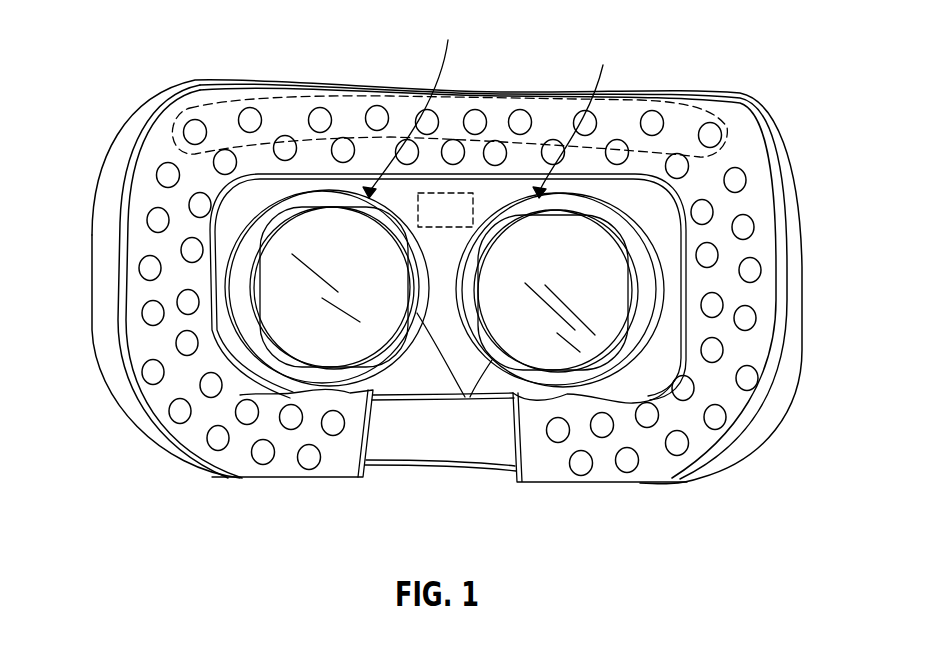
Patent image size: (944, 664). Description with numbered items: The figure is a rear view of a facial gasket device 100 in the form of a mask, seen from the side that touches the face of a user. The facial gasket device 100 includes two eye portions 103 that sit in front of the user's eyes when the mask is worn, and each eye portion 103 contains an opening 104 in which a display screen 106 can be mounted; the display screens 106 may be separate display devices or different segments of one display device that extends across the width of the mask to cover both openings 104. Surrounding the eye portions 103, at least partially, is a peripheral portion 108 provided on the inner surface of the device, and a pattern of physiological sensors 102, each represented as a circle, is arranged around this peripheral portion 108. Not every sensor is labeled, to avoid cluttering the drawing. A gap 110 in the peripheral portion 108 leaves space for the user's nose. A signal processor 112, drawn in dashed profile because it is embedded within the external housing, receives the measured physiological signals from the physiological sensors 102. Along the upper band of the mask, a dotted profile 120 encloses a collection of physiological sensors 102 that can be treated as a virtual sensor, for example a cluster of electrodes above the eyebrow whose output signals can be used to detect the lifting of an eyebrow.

The facial gasket device 100 is at (448, 284).
The physiological sensor 102 is at (195, 122).
The eye portion 103 is at (494, 103).
The opening 104 is at (466, 399).
The display screen 106 is at (378, 255).
The peripheral portion 108 is at (755, 425).
The gap 110 is at (497, 455).
The signal processor 112 is at (461, 228).
The dotted profile 120 is at (700, 110).